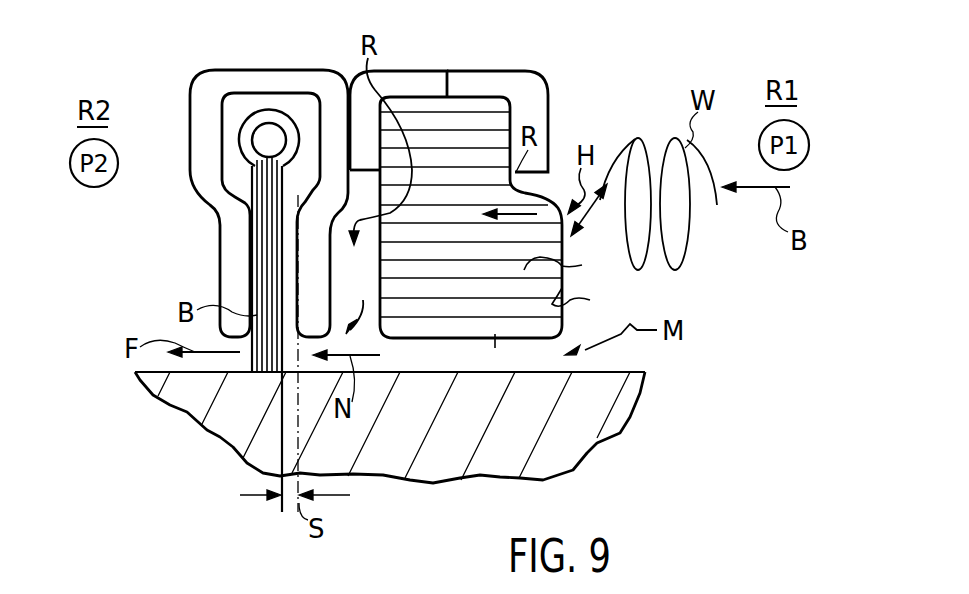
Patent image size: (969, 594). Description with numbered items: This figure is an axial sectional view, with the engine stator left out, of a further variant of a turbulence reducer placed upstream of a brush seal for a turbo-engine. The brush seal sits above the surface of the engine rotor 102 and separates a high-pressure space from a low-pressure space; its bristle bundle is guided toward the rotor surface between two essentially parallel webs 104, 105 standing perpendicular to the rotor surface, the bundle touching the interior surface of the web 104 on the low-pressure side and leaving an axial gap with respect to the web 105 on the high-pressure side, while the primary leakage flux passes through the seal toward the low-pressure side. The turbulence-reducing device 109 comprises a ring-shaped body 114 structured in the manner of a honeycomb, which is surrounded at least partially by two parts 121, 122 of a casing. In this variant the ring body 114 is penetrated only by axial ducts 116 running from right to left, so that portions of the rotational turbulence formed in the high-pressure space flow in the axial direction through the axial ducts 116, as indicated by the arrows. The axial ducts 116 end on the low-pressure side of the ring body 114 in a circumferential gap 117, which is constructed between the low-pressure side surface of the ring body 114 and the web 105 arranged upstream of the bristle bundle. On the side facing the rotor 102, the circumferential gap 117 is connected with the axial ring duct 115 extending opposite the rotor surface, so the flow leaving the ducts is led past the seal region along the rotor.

The engine rotor 102 is at (230, 448).
The web 104 is at (228, 276).
The web 105 is at (308, 246).
The device 109 is at (568, 62).
The ring-shaped body 114 is at (572, 262).
The axial ring duct 115 is at (492, 369).
The axial ducts 116 is at (590, 300).
The circumferential gap 117 is at (366, 294).
The casing part 121 is at (427, 80).
The casing part 122 is at (520, 85).